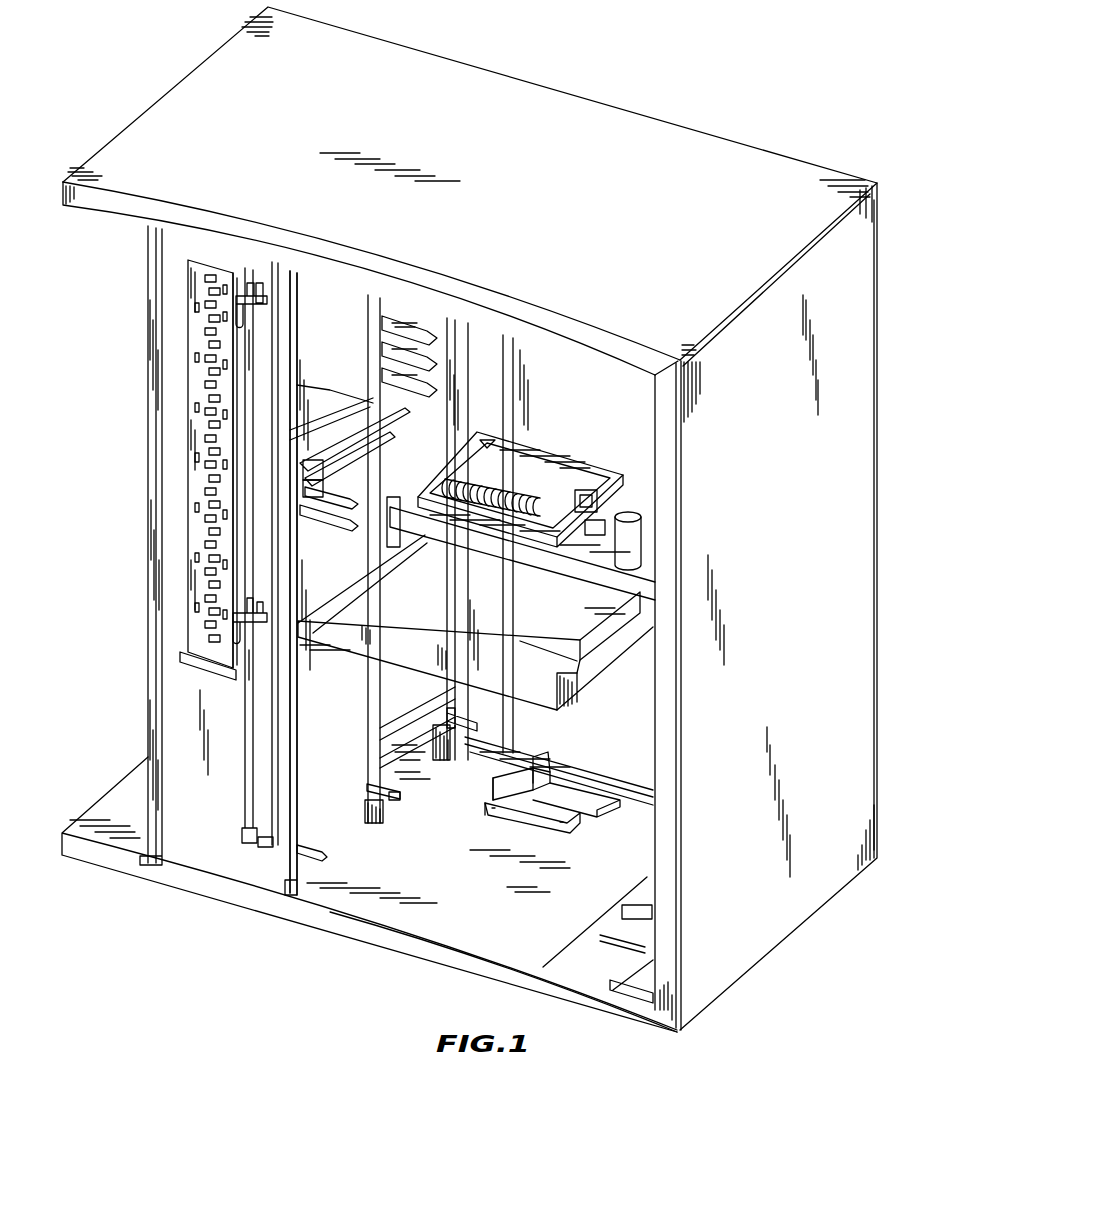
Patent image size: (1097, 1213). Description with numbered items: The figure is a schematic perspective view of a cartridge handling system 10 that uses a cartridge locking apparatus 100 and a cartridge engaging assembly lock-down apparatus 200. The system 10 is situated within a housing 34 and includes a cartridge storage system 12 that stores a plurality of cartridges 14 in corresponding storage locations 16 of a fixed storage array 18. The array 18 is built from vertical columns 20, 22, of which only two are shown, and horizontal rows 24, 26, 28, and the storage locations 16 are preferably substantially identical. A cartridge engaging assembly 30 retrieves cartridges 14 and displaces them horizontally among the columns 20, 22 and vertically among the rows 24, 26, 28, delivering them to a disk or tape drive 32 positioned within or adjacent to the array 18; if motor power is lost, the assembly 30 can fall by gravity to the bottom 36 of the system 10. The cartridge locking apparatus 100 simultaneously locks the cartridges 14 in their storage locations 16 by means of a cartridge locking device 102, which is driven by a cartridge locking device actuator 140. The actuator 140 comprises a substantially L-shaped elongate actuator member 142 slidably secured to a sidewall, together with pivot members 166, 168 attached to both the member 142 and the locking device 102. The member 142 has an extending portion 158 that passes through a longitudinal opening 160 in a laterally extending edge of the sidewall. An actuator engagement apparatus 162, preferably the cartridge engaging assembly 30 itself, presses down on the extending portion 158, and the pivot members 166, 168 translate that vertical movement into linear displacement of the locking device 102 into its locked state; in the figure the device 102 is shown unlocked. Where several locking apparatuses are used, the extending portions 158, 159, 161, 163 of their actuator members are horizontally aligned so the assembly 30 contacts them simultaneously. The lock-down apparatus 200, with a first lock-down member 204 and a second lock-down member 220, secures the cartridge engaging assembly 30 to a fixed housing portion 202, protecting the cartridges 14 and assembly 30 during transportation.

The cartridge handling system 10 is at (469, 519).
The cartridge storage system 12 is at (428, 270).
The cartridges 14 is at (382, 426).
The storage locations 16 is at (425, 373).
The fixed storage array 18 is at (430, 270).
The vertical column 20 is at (330, 305).
The vertical column 22 is at (425, 318).
The horizontal row 24 is at (362, 470).
The horizontal row 26 is at (352, 490).
The horizontal row 28 is at (350, 515).
The cartridge engaging assembly 30 is at (592, 450).
The disk or tape drive 32 is at (392, 688).
The housing 34 is at (700, 68).
The bottom 36 is at (472, 948).
The cartridge locking apparatus 100 is at (159, 470).
The cartridge locking device 102 is at (190, 563).
The cartridge locking device actuator 140 is at (246, 760).
The elongate actuator member 142 is at (249, 700).
The extending portion 158 is at (330, 848).
The extending portion 159 is at (395, 800).
The longitudinal opening 160 is at (295, 850).
The extending portion 161 is at (400, 790).
The actuator engagement apparatus 162 is at (594, 450).
The extending portion 163 is at (470, 740).
The pivot member 166 is at (240, 298).
The pivot member 168 is at (264, 624).
The cartridge engaging assembly lock-down apparatus 200 is at (596, 802).
The fixed housing portion 202 is at (600, 838).
The first lock-down member 204 is at (580, 782).
The second lock-down member 220 is at (505, 805).